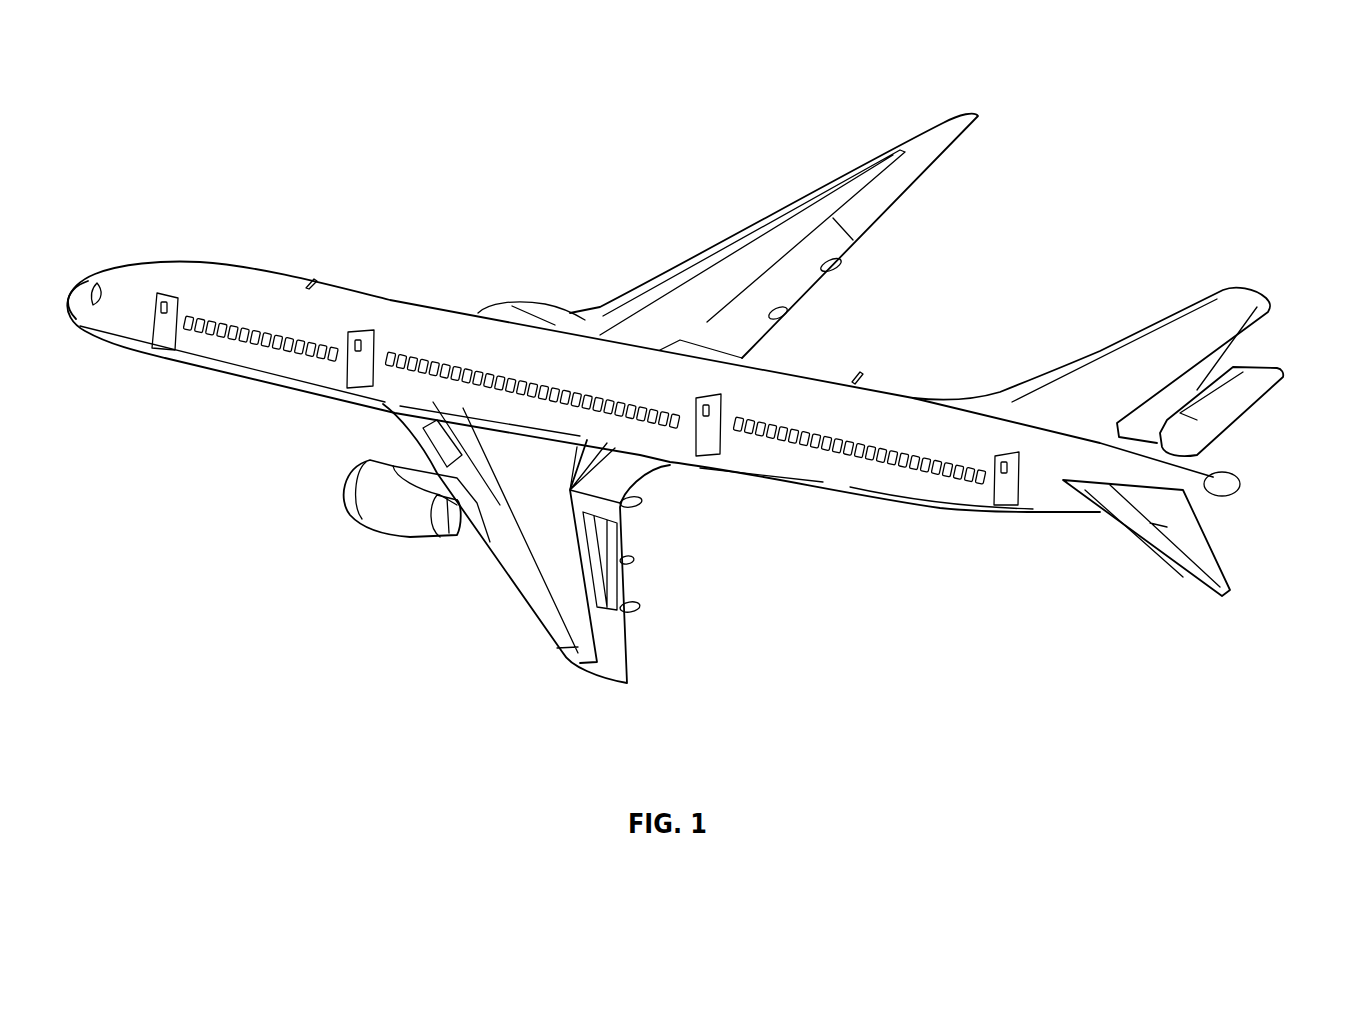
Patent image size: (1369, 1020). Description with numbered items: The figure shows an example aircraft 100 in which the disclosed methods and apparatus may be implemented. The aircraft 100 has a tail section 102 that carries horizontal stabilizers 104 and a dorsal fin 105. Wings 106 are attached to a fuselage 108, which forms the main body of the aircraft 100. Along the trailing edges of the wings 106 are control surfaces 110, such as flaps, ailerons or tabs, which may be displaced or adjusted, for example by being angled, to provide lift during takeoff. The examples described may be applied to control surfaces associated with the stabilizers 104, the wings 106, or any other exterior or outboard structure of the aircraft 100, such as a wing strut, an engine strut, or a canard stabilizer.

The aircraft 100 is at (1157, 96).
The tail section 102 is at (1293, 309).
The horizontal stabilizers 104 is at (1220, 397).
The dorsal fin 105 is at (1103, 372).
The wings 106 is at (745, 267).
The fuselage 108 is at (477, 323).
The control surfaces 110 is at (830, 247).